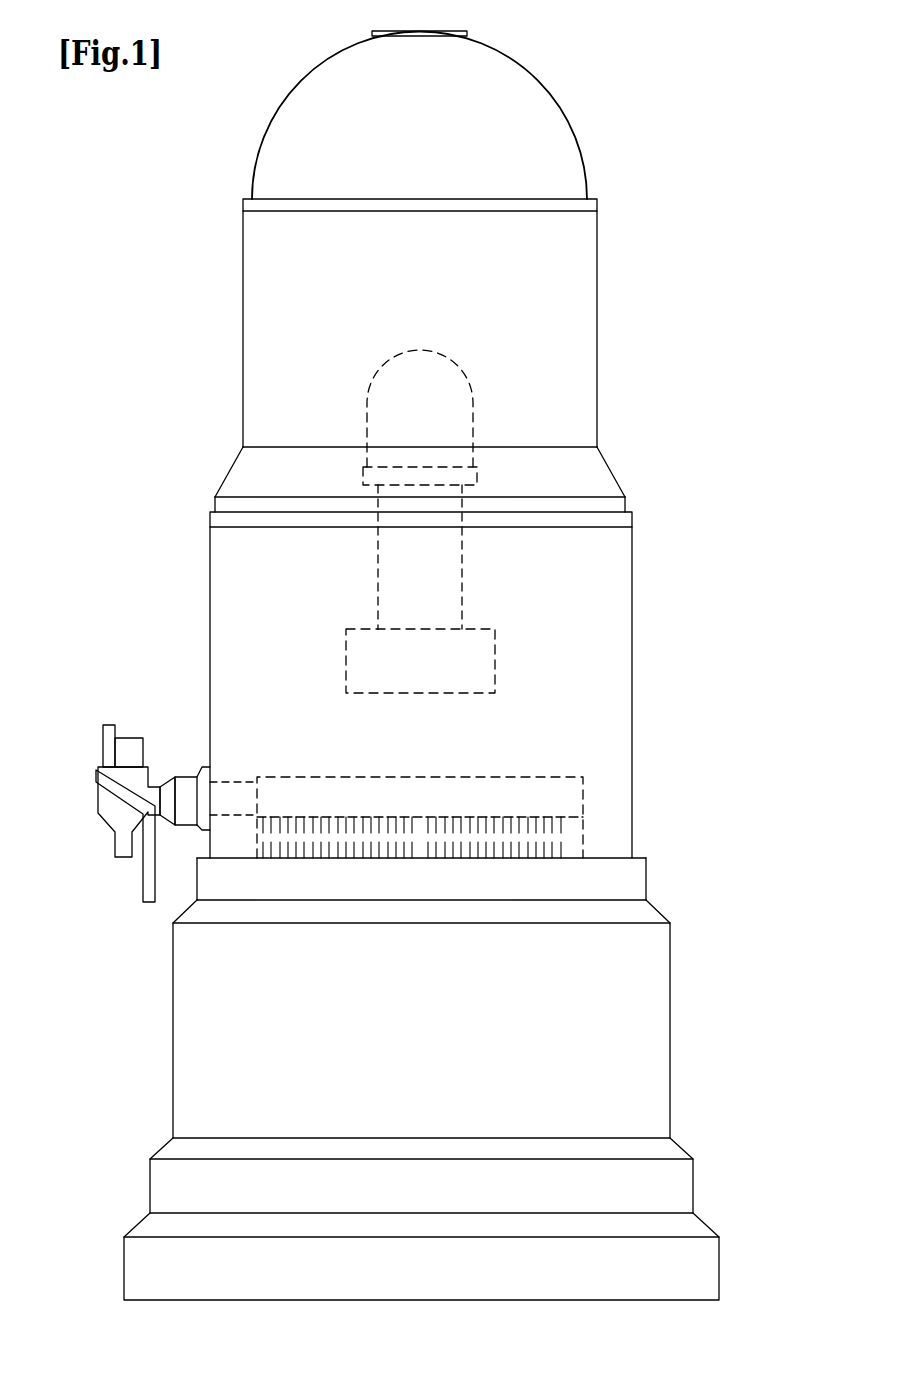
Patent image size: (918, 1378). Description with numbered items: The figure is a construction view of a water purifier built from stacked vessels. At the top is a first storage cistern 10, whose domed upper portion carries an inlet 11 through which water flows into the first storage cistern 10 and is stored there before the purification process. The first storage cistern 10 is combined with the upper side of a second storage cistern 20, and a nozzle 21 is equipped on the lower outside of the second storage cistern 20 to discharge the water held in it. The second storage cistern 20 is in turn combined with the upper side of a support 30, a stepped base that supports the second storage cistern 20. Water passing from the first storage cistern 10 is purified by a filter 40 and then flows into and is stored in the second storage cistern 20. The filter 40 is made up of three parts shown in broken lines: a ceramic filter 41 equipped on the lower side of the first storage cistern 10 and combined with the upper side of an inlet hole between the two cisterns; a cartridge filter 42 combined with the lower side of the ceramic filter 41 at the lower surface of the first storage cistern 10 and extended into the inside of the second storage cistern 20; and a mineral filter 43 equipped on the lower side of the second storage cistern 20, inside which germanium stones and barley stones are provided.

The first storage cistern 10 is at (596, 300).
The inlet 11 is at (467, 35).
The second storage cistern 20 is at (632, 718).
The nozzle 21 is at (136, 745).
The support 30 is at (655, 1037).
The filter 40 is at (548, 555).
The ceramic filter 41 is at (460, 426).
The cartridge filter 42 is at (453, 599).
The mineral filter 43 is at (573, 792).